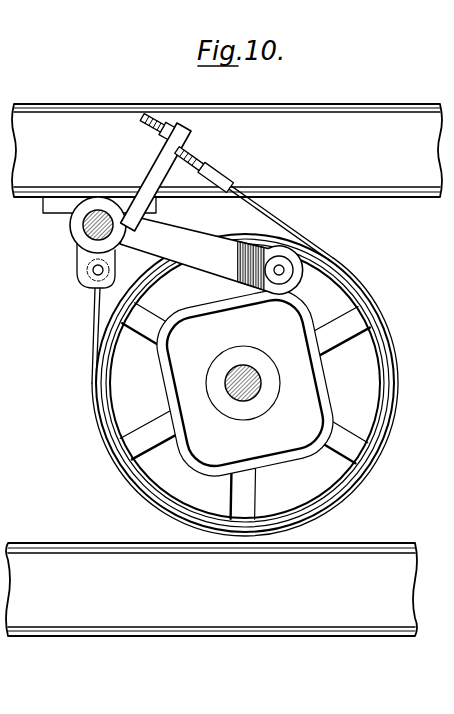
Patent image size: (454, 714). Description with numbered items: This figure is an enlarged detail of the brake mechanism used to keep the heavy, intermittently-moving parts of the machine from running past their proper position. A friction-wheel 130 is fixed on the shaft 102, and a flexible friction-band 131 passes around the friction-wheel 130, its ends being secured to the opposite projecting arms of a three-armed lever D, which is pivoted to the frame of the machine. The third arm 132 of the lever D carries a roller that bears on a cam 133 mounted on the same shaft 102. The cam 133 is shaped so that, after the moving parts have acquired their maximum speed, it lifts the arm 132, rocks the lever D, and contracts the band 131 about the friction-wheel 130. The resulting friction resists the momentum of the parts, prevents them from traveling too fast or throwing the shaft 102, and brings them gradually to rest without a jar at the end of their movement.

The shaft 102 is at (260, 381).
The friction-wheel 130 is at (323, 271).
The friction-band 131 is at (395, 369).
The arm 132 is at (186, 245).
The cam 133 is at (270, 456).
The three-armed lever D is at (177, 172).